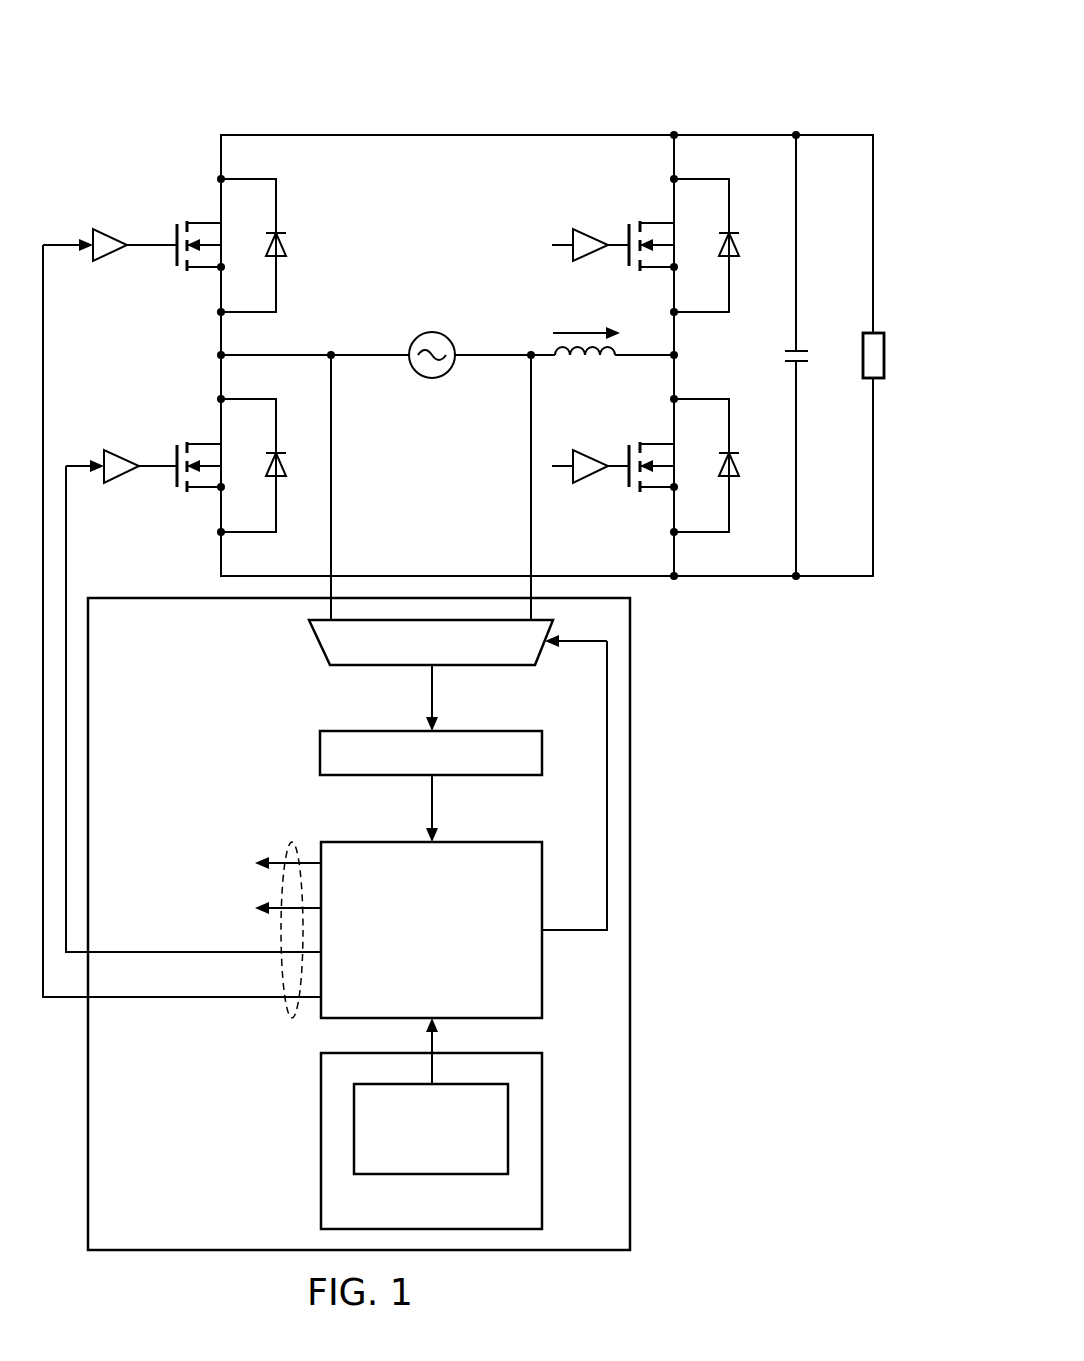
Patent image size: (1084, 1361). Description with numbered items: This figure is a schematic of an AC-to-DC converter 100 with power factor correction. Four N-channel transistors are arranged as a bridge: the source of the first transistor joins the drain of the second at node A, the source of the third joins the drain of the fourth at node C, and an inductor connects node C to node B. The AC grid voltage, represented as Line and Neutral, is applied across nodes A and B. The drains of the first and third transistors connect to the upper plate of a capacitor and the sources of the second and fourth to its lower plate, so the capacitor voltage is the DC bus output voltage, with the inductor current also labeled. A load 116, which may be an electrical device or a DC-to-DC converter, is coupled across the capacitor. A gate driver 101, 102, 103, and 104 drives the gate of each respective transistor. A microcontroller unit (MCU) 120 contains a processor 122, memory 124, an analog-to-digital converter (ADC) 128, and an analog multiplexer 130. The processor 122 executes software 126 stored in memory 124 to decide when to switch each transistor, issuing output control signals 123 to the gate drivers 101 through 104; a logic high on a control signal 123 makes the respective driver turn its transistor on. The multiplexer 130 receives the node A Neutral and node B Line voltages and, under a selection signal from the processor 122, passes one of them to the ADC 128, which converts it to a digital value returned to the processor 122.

The AC-to-DC converter 100 is at (349, 72).
The gate driver 101 is at (110, 235).
The gate driver 102 is at (120, 455).
The gate driver 103 is at (594, 232).
The gate driver 104 is at (594, 456).
The load 116 is at (884, 352).
The microcontroller unit (MCU) 120 is at (227, 1157).
The processor 122 is at (452, 963).
The output control signals 123 is at (292, 1018).
The memory 124 is at (523, 1215).
The software 126 is at (452, 1162).
The analog-to-digital converter (ADC) 128 is at (400, 781).
The analog multiplexer 130 is at (398, 668).